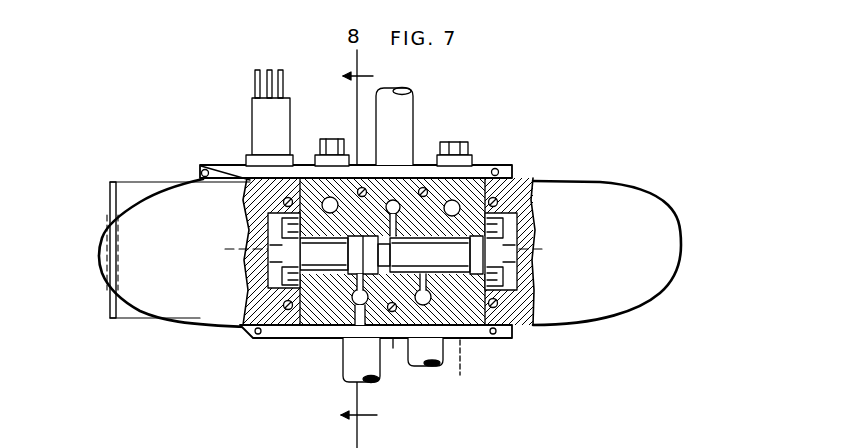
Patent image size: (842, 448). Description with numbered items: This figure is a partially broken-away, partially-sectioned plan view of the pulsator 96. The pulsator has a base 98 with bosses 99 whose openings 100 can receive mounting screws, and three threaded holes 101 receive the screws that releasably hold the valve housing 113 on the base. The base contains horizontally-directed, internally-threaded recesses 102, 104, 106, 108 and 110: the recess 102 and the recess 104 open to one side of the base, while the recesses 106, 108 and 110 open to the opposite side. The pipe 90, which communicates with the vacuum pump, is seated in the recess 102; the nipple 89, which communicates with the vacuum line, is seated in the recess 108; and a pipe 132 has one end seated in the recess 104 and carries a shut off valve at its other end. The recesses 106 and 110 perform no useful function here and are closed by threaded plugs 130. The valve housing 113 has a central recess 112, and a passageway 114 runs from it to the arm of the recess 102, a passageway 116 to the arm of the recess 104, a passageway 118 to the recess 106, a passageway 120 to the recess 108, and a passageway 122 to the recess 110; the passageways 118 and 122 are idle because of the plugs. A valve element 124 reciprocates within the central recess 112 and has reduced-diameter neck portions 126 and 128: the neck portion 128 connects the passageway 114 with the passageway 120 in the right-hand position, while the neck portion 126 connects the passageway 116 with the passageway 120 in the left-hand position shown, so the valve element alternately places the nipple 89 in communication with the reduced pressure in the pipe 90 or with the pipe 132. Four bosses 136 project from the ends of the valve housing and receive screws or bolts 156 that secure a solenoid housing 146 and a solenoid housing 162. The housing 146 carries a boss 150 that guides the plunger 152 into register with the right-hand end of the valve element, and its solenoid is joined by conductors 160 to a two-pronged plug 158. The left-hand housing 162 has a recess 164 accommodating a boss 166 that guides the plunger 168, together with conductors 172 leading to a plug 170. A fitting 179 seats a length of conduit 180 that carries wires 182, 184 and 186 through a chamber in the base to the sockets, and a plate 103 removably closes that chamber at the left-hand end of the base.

The nipple 89 is at (413, 108).
The pipe 90 is at (355, 377).
The pulsator 96 is at (563, 104).
The base 98 is at (123, 182).
The bosses 99 is at (208, 162).
The openings 100 is at (201, 172).
The threaded holes 101 is at (373, 187).
The recess 102 is at (394, 352).
The plate 103 is at (107, 312).
The recess 104 is at (457, 368).
The recess 106 is at (302, 178).
The recess 108 is at (423, 167).
The recess 110 is at (483, 133).
The central recess 112 is at (306, 338).
The valve housing 113 is at (302, 343).
The passageway 114 is at (389, 345).
The passageway 116 is at (465, 338).
The passageway 118 is at (340, 139).
The passageway 120 is at (393, 218).
The passageway 122 is at (468, 173).
The valve element 124 is at (250, 232).
The neck portion 126 is at (392, 255).
The neck portion 128 is at (345, 255).
The threaded plugs 130 is at (327, 140).
The pipe 132 is at (427, 363).
The bosses 136 is at (533, 197).
The solenoid housing 146 is at (652, 215).
The boss 150 is at (537, 272).
The plunger 152 is at (548, 255).
The screws or bolts 156 is at (290, 200).
The two-pronged plug 158 is at (533, 283).
The conductors 160 is at (533, 227).
The solenoid housing 162 is at (158, 300).
The recess 164 is at (237, 330).
The boss 166 is at (245, 273).
The plunger 168 is at (235, 256).
The plug 170 is at (248, 212).
The conductors 172 is at (248, 223).
The fitting 179 is at (245, 158).
The conduit 180 is at (252, 113).
The wire 182 is at (281, 70).
The wire 184 is at (269, 70).
The wire 186 is at (257, 83).